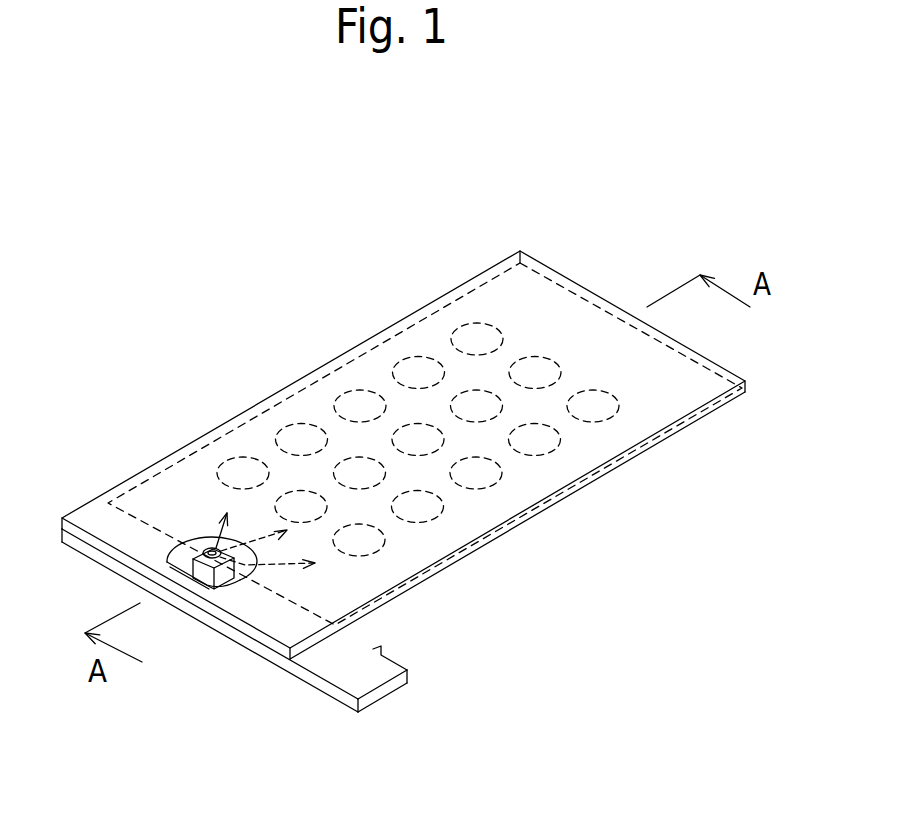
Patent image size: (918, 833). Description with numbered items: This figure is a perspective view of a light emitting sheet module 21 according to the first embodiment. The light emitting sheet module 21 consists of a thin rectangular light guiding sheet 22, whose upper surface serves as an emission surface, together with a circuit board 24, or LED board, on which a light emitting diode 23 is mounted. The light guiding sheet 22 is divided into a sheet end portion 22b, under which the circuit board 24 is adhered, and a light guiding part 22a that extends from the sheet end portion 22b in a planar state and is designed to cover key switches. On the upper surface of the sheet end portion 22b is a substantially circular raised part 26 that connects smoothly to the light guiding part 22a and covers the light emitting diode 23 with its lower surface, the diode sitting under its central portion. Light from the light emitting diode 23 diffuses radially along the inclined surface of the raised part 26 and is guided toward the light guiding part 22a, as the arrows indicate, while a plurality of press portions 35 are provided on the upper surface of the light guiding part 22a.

The light emitting sheet module 21 is at (550, 207).
The light guiding sheet 22 is at (417, 307).
The light guiding part 22a is at (547, 503).
The sheet end portion 22b is at (277, 620).
The light emitting diode 23 is at (177, 540).
The circuit board 24 is at (350, 683).
The raised part 26 is at (200, 538).
The press portions 35 is at (287, 425).